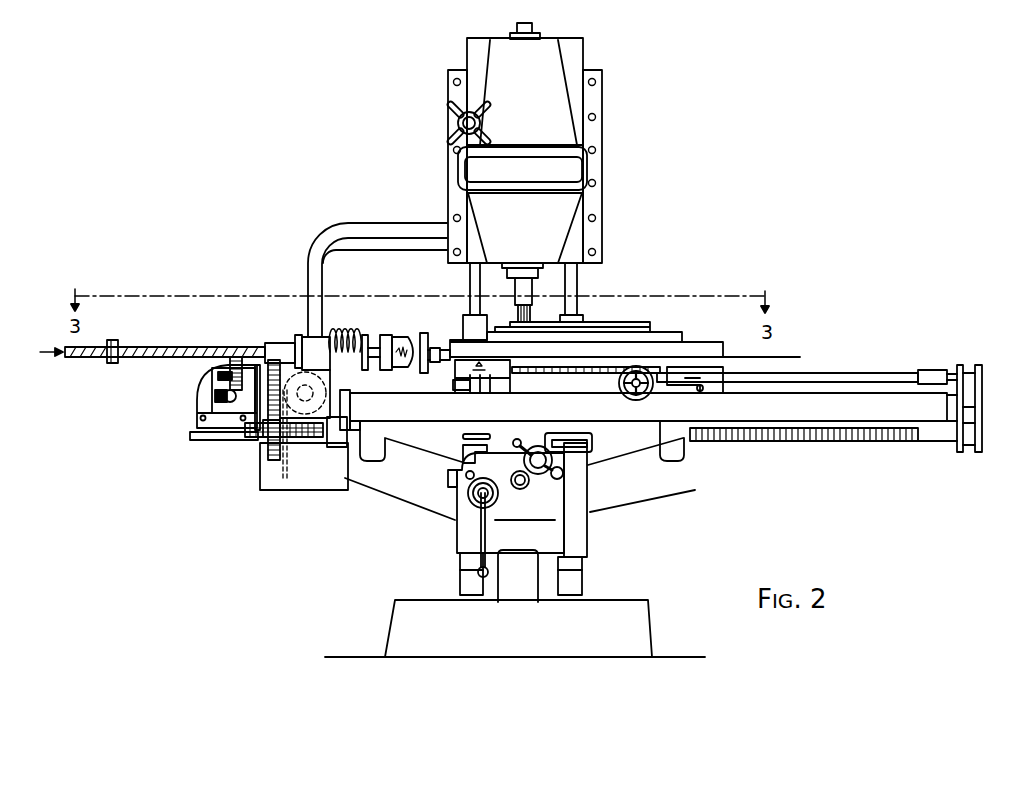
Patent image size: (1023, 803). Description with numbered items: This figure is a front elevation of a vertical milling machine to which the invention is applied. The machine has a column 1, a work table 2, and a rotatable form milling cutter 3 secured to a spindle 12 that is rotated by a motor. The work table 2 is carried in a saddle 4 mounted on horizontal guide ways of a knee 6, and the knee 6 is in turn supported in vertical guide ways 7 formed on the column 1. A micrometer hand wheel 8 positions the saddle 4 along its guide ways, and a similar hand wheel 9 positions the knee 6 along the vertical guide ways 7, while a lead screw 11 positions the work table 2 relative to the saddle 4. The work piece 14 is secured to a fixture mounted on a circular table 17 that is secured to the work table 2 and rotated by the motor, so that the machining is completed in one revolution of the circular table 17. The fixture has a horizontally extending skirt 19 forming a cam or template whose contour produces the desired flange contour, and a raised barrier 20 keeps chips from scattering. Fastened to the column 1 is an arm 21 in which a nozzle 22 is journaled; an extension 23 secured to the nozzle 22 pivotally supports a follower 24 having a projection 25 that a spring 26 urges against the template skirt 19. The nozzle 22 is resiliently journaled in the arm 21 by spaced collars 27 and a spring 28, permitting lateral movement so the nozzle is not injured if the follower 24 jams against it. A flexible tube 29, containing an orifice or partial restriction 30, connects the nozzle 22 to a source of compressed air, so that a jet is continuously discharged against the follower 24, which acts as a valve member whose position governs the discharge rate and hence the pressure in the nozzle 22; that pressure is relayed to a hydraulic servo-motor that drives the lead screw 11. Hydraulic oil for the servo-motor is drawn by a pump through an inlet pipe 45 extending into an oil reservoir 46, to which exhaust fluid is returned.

The column 1 is at (528, 172).
The work table 2 is at (838, 393).
The form milling cutter 3 is at (533, 316).
The saddle 4 is at (642, 452).
The knee 6 is at (590, 522).
The vertical guide ways 7 is at (459, 584).
The micrometer hand wheel 8 is at (541, 474).
The hand wheel 9 is at (478, 563).
The lead screw 11 is at (812, 443).
The spindle 12 is at (515, 292).
The work piece 14 is at (638, 325).
The circular table 17 is at (517, 375).
The skirt 19 is at (733, 356).
The raised barrier 20 is at (464, 343).
The arm 21 is at (308, 273).
The nozzle 22 is at (424, 333).
The extension 23 is at (384, 335).
The follower 24 is at (455, 336).
The projection 25 is at (454, 366).
The spring 26 is at (402, 340).
The spaced collars 27 is at (296, 338).
The spring 28 is at (340, 340).
The flexible tube 29 is at (163, 358).
The orifice or partial restriction 30 is at (112, 365).
The inlet pipe 45 is at (280, 482).
The oil reservoir 46 is at (331, 492).